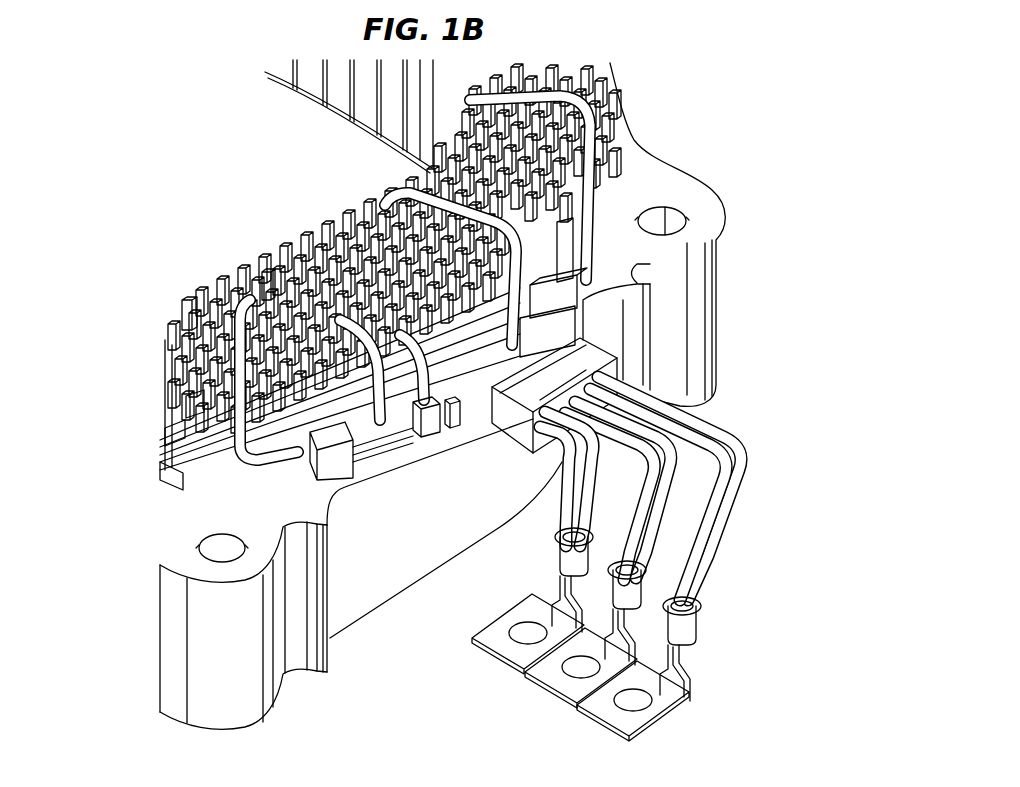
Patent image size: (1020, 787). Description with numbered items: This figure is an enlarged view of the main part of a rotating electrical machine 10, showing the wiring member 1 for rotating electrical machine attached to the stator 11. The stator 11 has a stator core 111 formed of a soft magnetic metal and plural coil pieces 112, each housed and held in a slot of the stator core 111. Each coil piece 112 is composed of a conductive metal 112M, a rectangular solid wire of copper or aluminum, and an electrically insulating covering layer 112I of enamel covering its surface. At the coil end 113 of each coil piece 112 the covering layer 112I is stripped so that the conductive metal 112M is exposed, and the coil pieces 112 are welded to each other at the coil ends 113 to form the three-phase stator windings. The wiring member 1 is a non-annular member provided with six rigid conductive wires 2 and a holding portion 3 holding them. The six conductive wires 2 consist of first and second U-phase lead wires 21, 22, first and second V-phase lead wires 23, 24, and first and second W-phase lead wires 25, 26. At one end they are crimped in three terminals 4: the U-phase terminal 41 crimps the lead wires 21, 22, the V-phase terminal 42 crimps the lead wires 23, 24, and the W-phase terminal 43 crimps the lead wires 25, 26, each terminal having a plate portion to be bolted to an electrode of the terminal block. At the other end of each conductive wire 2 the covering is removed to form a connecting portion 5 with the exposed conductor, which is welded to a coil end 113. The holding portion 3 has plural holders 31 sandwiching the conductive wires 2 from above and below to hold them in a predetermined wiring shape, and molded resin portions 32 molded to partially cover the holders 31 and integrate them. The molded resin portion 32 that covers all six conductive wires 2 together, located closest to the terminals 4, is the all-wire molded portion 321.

The wiring member for rotating electrical machine 1 is at (826, 549).
The conductive wires 2 is at (767, 448).
The holding portion 3 is at (617, 352).
The terminals 4 is at (695, 716).
The connecting portion 5 is at (228, 338).
The rotating electrical machine 10 is at (188, 168).
The stator 11 is at (641, 135).
The first U-phase lead wire 21 is at (699, 428).
The second U-phase lead wire 22 is at (702, 447).
The first V-phase lead wire 23 is at (672, 480).
The second V-phase lead wire 24 is at (644, 498).
The first W-phase lead wire 25 is at (594, 527).
The second W-phase lead wire 26 is at (571, 540).
The holders 31 is at (567, 272).
The molded resin portions 32 is at (507, 428).
The U-phase terminal 41 is at (606, 722).
The V-phase terminal 42 is at (548, 690).
The W-phase terminal 43 is at (493, 660).
The stator core 111 is at (652, 178).
The coil pieces 112 is at (183, 298).
The conductive metal 112M is at (190, 405).
The covering layer 112I is at (175, 432).
The coil end 113 is at (270, 272).
The all-wire molded portion 321 is at (592, 345).